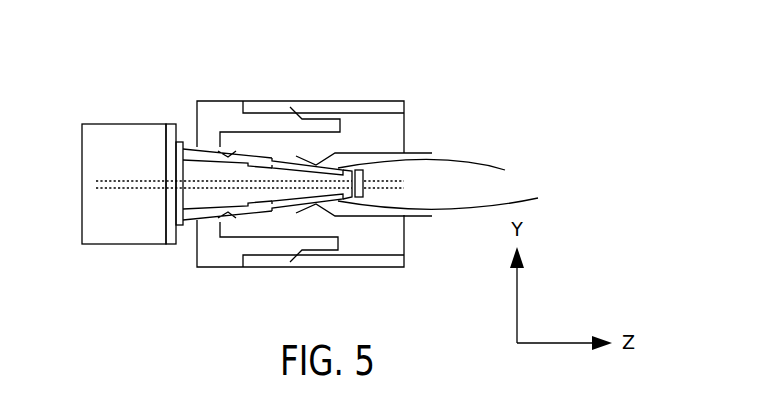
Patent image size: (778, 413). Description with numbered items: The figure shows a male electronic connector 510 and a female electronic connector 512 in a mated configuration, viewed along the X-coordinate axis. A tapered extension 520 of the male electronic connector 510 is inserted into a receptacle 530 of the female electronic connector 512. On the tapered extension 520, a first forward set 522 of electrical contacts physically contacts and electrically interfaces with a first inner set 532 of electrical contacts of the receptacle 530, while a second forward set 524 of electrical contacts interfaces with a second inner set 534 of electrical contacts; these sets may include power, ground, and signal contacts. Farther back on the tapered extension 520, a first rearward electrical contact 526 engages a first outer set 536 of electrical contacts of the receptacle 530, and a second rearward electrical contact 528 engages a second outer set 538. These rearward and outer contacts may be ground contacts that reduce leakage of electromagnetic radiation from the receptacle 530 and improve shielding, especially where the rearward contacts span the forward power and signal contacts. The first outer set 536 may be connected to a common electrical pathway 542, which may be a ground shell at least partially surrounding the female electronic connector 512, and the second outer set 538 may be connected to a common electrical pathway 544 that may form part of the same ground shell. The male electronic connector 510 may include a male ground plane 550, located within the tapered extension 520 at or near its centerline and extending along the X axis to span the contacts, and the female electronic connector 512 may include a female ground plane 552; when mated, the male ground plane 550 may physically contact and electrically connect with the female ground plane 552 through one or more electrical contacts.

The male electronic connector 510 is at (101, 112).
The female electronic connector 512 is at (405, 75).
The tapered extension 520 is at (438, 170).
The first forward set of electrical contacts 522 is at (278, 160).
The second forward set of electrical contacts 524 is at (277, 205).
The first rearward electrical contact 526 is at (203, 153).
The second rearward electrical contact 528 is at (202, 215).
The receptacle 530 is at (454, 198).
The first inner set of electrical contacts 532 is at (416, 150).
The second inner set of electrical contacts 534 is at (416, 218).
The first outer set of electrical contacts 536 is at (318, 118).
The second outer set of electrical contacts 538 is at (323, 251).
The common electrical pathway 542 is at (391, 104).
The common electrical pathway 544 is at (397, 262).
The male ground plane 550 is at (102, 183).
The female ground plane 552 is at (398, 184).